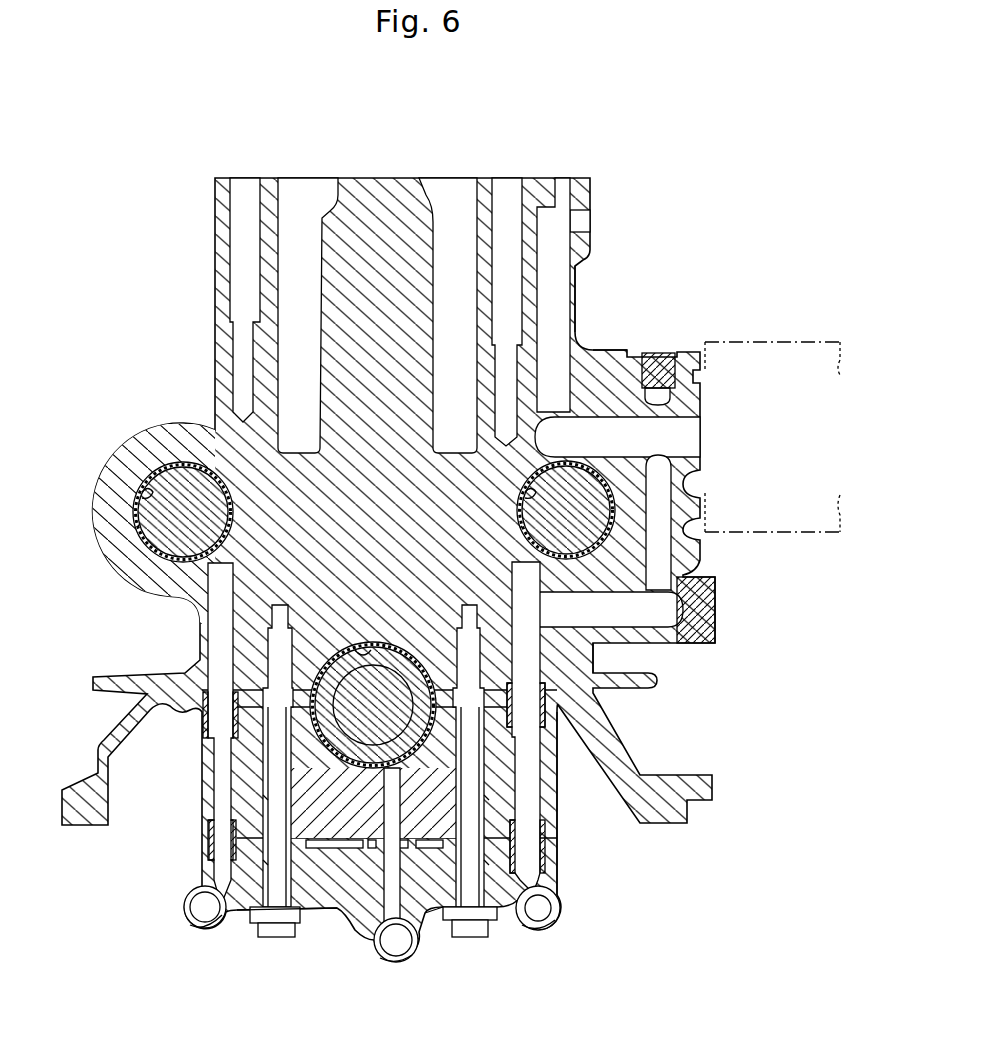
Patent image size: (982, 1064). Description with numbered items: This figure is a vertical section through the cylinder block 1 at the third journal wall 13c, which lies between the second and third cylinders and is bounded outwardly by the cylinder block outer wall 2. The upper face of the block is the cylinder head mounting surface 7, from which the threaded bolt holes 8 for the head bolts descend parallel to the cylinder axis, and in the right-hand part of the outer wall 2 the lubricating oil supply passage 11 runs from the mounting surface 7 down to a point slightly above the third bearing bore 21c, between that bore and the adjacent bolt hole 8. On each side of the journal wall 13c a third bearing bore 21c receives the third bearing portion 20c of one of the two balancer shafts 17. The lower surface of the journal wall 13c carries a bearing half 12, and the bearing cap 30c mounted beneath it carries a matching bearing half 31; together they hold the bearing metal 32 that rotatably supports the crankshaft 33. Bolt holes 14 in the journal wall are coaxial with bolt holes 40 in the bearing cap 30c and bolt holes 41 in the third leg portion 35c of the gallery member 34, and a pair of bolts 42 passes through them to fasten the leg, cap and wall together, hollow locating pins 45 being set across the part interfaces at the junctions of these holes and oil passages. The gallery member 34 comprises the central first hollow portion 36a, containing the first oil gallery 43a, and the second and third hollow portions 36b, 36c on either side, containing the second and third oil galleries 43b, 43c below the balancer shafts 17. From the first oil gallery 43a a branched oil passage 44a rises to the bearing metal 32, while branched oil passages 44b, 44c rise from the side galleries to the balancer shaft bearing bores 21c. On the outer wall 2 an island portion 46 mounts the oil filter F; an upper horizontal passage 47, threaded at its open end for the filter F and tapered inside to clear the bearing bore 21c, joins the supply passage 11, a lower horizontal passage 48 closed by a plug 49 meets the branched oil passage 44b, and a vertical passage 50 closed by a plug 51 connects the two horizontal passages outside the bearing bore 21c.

The cylinder block 1 is at (645, 132).
The cylinder block outer wall 2 is at (575, 290).
The cylinder head mounting surface 7 is at (393, 178).
The threaded bolt holes 8 is at (251, 205).
The lubricating oil supply passage 11 is at (560, 205).
The bearing half 12 is at (363, 650).
The third journal wall 13c is at (348, 524).
The bolt holes 14 is at (280, 650).
The balancer shafts 17 is at (170, 519).
The third bearing portion 20c is at (140, 525).
The third bearing bore 21c is at (150, 498).
The bearing cap 30c is at (555, 805).
The bearing half 31 is at (355, 757).
The bearing metal 32 is at (428, 715).
The crankshaft 33 is at (343, 732).
The gallery member 34 is at (430, 930).
The third leg portion 35c is at (318, 911).
The first hollow portion 36a is at (397, 973).
The second hollow portion 36b is at (547, 930).
The third hollow portion 36c is at (188, 923).
The bolt holes 40 is at (284, 800).
The bolt holes 41 is at (284, 862).
The bolts 42 is at (263, 937).
The first oil gallery 43a is at (380, 947).
The second oil gallery 43b is at (551, 907).
The third oil gallery 43c is at (193, 907).
The branched oil passage 44a is at (386, 867).
The branched oil passage 44b is at (540, 768).
The branched oil passage 44c is at (207, 760).
The hollow locating pin 45 is at (205, 730).
The island portion 46 is at (615, 350).
The upper horizontal passage 47 is at (587, 425).
The lower horizontal passage 48 is at (633, 623).
The plug 49 is at (715, 597).
The vertical passage 50 is at (665, 540).
The plug 51 is at (667, 352).
The oil filter F is at (797, 340).